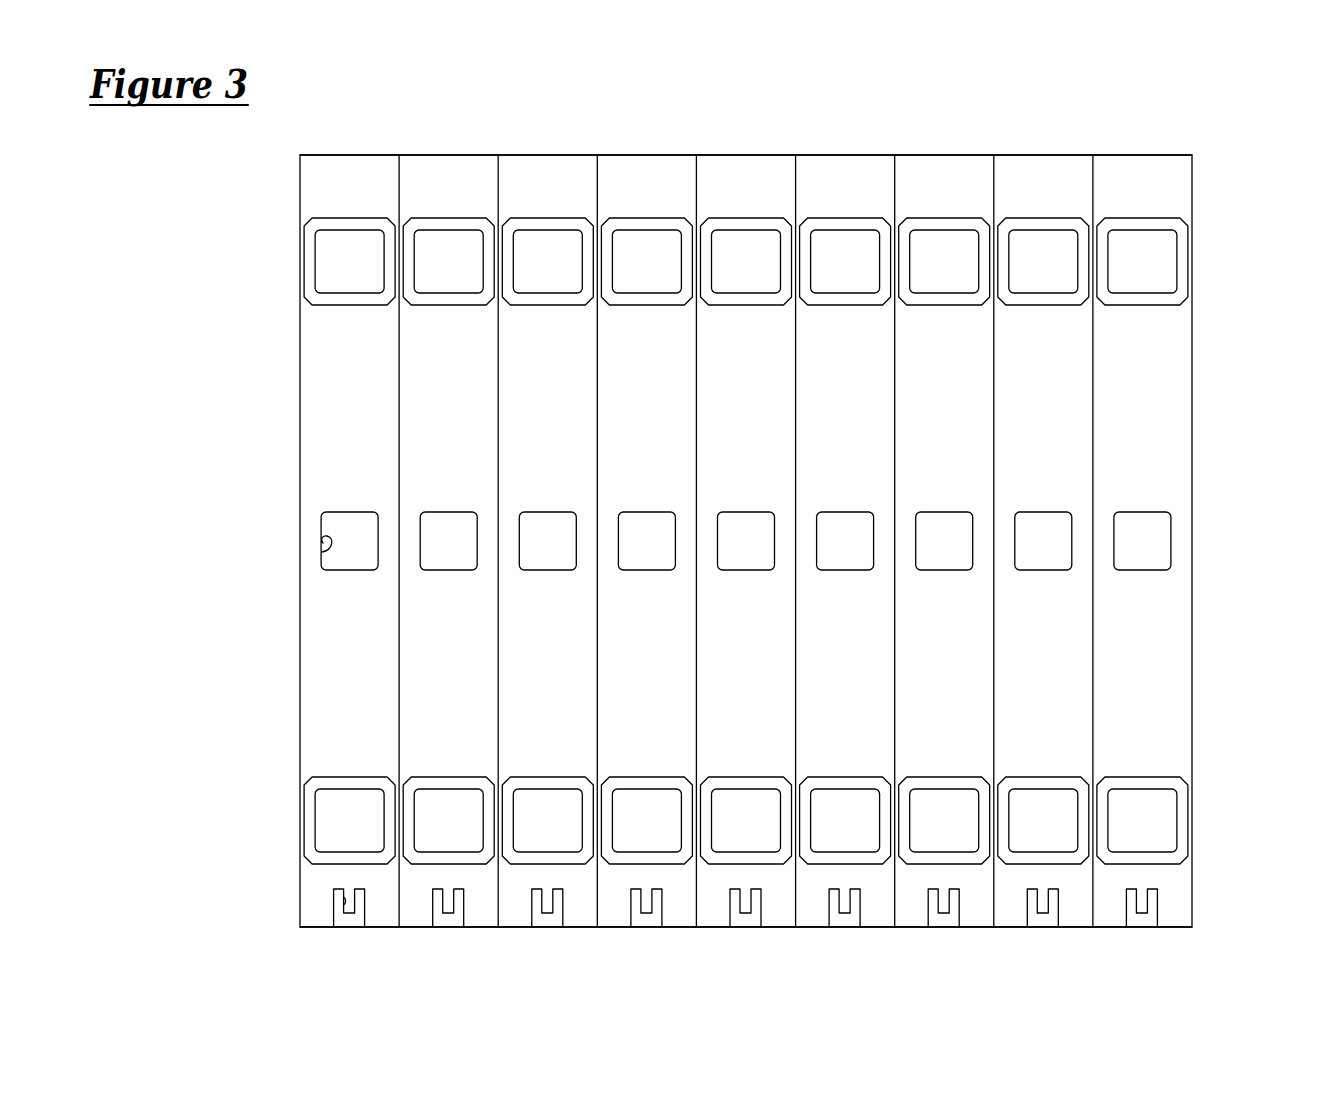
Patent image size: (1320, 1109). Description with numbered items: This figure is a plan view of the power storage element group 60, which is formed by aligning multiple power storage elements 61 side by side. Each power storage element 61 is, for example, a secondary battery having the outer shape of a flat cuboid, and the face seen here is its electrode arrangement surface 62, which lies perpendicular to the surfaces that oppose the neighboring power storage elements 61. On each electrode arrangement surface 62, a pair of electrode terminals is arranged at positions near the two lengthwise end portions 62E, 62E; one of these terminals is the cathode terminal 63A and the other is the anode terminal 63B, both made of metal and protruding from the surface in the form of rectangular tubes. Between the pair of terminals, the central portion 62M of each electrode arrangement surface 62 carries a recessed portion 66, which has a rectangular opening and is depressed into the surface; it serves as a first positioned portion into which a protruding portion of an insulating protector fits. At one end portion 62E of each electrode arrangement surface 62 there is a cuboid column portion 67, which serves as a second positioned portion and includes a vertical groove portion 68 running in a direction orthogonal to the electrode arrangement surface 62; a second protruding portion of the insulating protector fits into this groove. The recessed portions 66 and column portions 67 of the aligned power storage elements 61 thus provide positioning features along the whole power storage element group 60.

The power storage element group 60 is at (827, 968).
The power storage element 61 is at (357, 177).
The electrode arrangement surface 62 is at (1172, 437).
The end portion 62E is at (1151, 155).
The central portion 62M is at (1178, 545).
The cathode terminal 63A is at (1055, 267).
The anode terminal 63B is at (1158, 257).
The recessed portion 66 is at (322, 552).
The column portion 67 is at (350, 918).
The vertical groove portion 68 is at (342, 903).